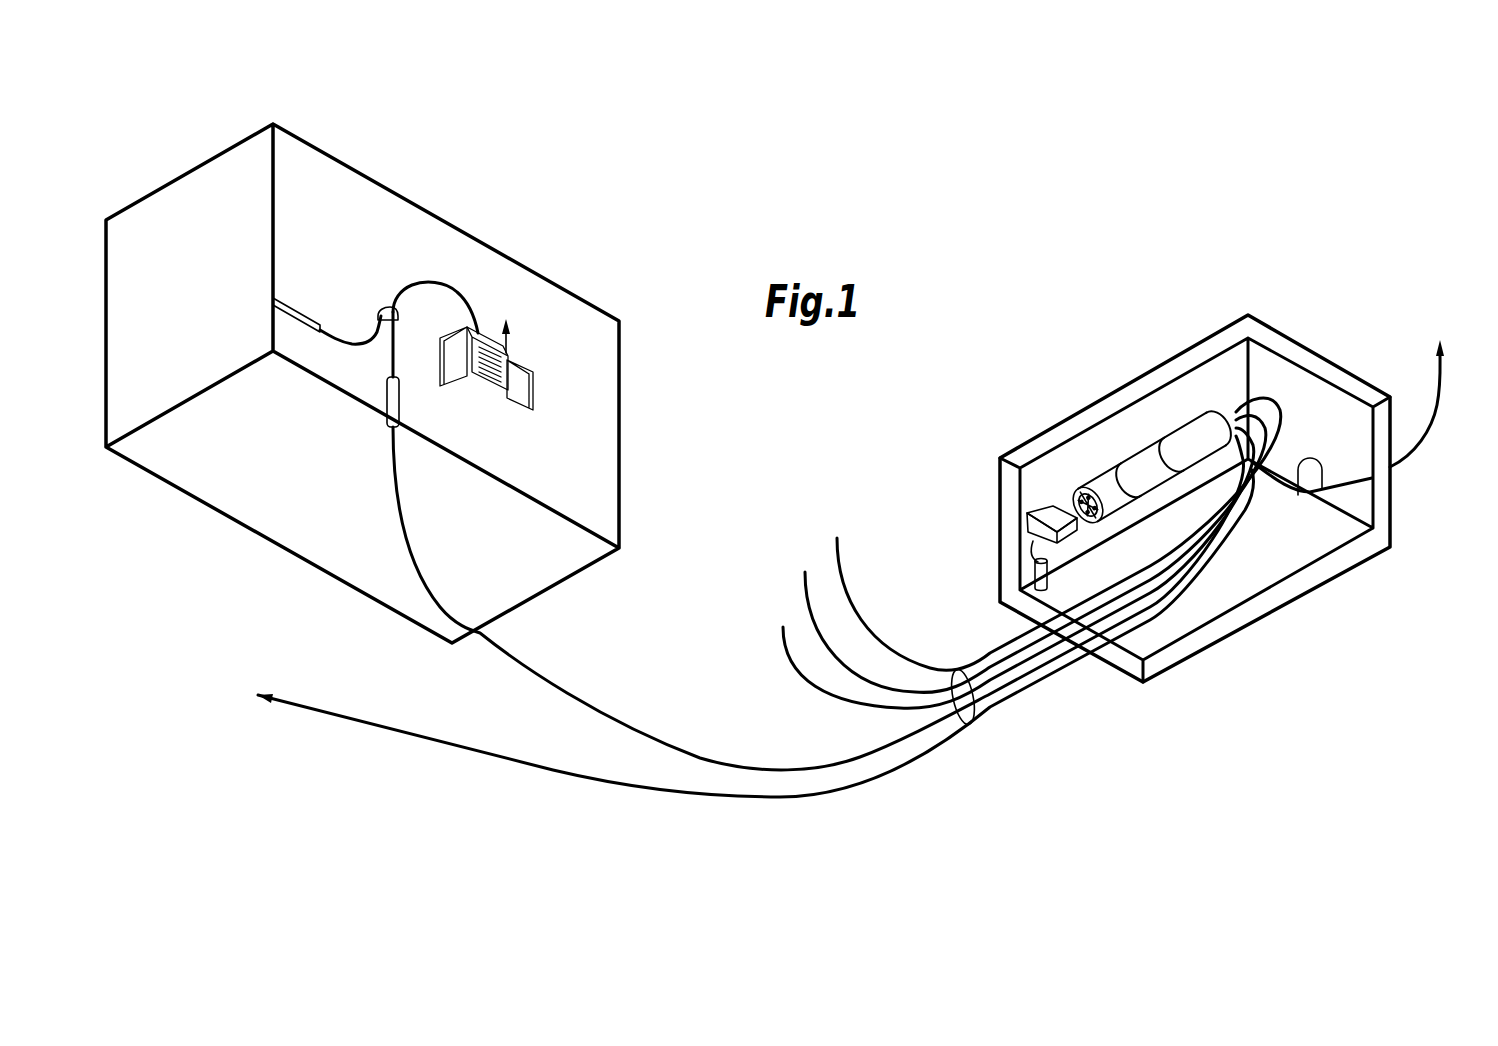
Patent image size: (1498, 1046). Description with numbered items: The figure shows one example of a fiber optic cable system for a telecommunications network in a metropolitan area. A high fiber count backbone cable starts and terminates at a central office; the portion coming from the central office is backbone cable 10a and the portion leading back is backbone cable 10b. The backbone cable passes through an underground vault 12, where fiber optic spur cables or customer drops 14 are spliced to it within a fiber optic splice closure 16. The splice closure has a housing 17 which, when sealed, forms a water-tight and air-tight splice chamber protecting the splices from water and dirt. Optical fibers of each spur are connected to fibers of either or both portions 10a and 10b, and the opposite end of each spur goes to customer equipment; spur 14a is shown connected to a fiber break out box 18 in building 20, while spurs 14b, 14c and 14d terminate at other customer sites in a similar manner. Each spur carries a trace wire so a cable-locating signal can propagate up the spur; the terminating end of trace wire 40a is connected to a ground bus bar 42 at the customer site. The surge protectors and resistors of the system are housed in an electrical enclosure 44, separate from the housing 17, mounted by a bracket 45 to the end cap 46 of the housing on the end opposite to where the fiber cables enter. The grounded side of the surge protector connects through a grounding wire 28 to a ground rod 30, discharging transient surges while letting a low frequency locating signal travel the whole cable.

The backbone cable 10a is at (1433, 417).
The backbone cable 10b is at (945, 747).
The underground vault 12 is at (1133, 382).
The fiber optic spur cables 14 is at (962, 670).
The spur 14a is at (538, 688).
The spur 14b is at (807, 677).
The spur 14c is at (805, 607).
The spur 14d is at (847, 608).
The fiber optic splice closure 16 is at (1150, 448).
The housing 17 is at (1203, 407).
The fiber break out box 18 is at (490, 330).
The building 20 is at (392, 190).
The grounding wire 28 is at (1030, 547).
The ground rod 30 is at (1035, 573).
The trace wire 40a is at (337, 343).
The ground bus bar 42 is at (295, 293).
The electrical enclosure 44 is at (1048, 505).
The bracket 45 is at (1078, 533).
The end cap 46 is at (1060, 497).